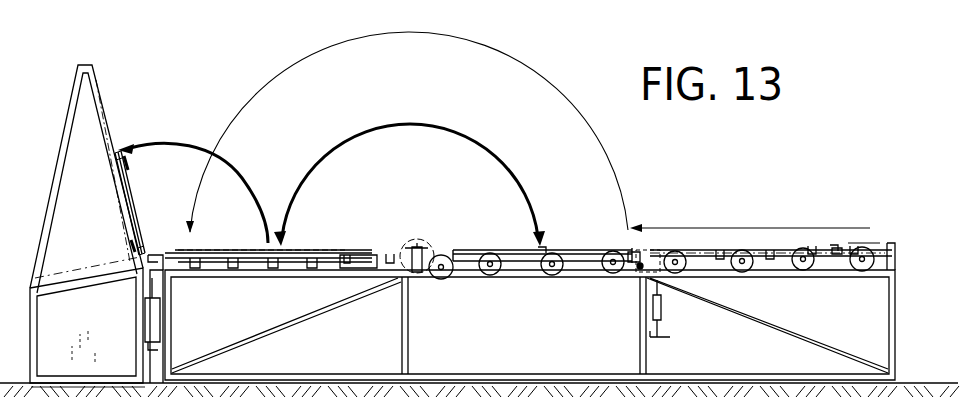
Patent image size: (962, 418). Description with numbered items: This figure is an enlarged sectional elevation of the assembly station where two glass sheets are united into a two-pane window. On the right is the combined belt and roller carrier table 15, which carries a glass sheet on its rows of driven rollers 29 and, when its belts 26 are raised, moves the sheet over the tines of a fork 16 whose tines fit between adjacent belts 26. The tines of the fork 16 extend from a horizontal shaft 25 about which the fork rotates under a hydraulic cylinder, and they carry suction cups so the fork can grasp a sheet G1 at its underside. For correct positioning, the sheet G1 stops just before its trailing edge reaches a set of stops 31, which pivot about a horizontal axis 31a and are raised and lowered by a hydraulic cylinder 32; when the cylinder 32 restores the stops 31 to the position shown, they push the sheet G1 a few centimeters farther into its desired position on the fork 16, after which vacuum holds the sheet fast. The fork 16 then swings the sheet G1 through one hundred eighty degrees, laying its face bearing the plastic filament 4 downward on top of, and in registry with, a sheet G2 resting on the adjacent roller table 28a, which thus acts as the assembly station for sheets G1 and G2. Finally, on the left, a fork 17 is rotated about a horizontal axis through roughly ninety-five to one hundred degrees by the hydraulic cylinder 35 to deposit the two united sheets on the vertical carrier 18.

The vertical carrier 18 is at (110, 137).
The glass sheet G1 is at (120, 196).
The glass sheet G2 is at (133, 192).
The fork 17 is at (325, 260).
The roller table 28a is at (350, 245).
The horizontal shaft 25 is at (420, 270).
The fork 16 is at (512, 262).
The filament 4 is at (543, 247).
The stops 31 is at (646, 250).
The horizontal axis 31a is at (644, 263).
The belts 26 is at (700, 250).
The combined belt and roller carrier table 15 is at (862, 237).
The driven rollers 29 is at (836, 254).
The hydraulic cylinder 32 is at (661, 306).
The hydraulic cylinder 35 is at (165, 319).